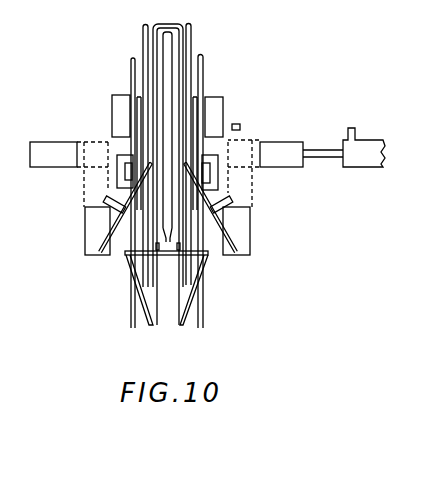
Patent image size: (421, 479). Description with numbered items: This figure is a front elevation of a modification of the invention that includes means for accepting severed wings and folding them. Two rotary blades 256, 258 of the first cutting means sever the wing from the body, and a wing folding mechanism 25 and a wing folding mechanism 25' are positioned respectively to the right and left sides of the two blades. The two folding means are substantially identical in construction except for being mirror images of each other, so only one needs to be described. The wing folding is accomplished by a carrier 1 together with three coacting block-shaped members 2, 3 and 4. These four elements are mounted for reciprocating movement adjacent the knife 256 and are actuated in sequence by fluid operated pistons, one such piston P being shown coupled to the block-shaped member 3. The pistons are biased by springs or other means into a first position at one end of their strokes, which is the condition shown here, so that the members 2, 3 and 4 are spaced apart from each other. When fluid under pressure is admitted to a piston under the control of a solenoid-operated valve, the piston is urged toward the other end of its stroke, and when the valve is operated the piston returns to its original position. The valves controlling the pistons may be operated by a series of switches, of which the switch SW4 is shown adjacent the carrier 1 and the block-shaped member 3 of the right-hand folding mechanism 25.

The wing folding mechanism 25' is at (65, 78).
The wing folding mechanism 25 is at (283, 72).
The block-shaped member 4 is at (122, 106).
The block-shaped member 3 is at (53, 152).
The carrier 1 is at (125, 172).
The block-shaped member 2 is at (95, 229).
The rotary blade 258 is at (117, 232).
The rotary blade 256 is at (221, 240).
The switch SW4 is at (243, 119).
The fluid operated piston P is at (367, 155).